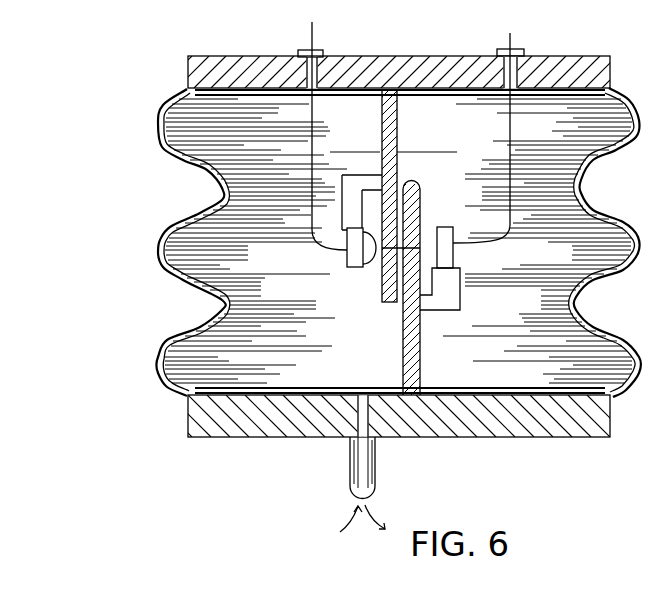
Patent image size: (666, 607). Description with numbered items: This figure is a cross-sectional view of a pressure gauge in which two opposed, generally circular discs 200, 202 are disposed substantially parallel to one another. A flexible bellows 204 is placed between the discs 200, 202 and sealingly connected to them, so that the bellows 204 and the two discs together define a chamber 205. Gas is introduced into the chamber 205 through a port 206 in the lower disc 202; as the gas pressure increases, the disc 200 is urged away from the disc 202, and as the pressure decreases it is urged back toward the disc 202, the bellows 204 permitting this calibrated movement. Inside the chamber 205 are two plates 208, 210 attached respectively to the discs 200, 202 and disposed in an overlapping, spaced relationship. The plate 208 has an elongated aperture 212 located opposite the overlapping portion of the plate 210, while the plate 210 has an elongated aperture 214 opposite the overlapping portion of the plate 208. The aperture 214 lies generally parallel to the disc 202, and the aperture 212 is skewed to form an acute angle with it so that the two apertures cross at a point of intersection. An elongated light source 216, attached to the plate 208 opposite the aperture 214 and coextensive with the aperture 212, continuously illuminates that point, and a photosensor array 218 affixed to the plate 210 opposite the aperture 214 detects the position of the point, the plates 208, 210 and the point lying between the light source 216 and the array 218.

The disc 200 is at (363, 57).
The disc 202 is at (542, 425).
The flexible bellows 204 is at (157, 247).
The chamber 205 is at (537, 310).
The port 206 is at (377, 483).
The plate 208 is at (396, 134).
The plate 210 is at (378, 272).
The aperture 212 is at (372, 268).
The aperture 214 is at (421, 246).
The elongated light source 216 is at (347, 258).
The photosensor array 218 is at (454, 248).